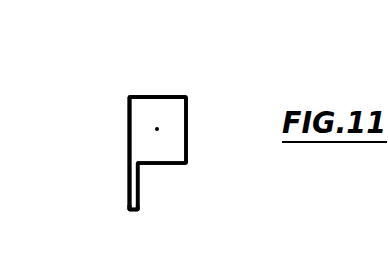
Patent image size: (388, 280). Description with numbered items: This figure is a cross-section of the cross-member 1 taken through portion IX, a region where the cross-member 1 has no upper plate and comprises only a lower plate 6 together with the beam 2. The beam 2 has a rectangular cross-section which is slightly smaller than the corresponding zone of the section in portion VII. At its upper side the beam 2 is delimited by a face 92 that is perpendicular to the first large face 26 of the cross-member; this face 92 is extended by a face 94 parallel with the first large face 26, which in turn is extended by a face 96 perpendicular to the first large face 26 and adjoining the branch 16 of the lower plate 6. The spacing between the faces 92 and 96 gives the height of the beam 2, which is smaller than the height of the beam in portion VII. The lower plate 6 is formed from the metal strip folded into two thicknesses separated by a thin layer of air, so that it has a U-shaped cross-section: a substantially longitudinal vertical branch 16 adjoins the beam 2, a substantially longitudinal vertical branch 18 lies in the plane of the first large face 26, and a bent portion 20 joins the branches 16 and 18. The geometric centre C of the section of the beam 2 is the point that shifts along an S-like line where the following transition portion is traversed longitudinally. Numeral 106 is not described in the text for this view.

The cross-member 1 is at (125, 96).
The beam 2 is at (202, 95).
The plate 6 is at (129, 213).
The vertical branch 16 is at (140, 197).
The vertical branch 18 is at (127, 196).
The bent portion 20 is at (134, 211).
The first large face 26 is at (127, 134).
The face 92 is at (152, 95).
The face 94 is at (188, 131).
The face 96 is at (167, 165).
The geometric centre C is at (157, 129).
The element 106 is at (56, 276).